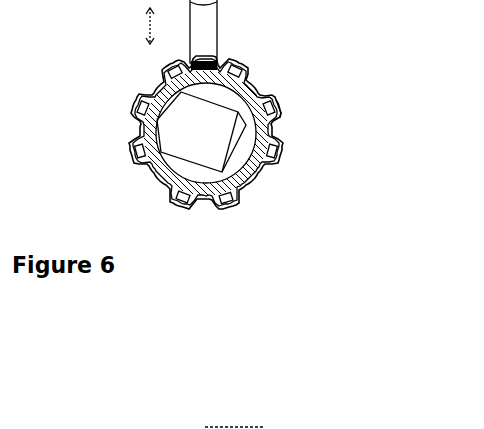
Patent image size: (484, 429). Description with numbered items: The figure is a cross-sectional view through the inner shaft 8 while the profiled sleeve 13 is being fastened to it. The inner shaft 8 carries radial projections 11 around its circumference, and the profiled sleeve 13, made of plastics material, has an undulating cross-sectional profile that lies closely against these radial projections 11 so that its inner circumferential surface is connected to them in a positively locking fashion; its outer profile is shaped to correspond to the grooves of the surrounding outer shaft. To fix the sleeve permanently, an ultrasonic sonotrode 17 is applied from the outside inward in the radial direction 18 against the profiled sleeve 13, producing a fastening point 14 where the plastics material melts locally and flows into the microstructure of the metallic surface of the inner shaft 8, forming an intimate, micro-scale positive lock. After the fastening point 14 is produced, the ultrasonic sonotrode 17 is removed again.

The inner shaft 8 is at (247, 205).
The radial projections 11 is at (278, 165).
The profiled sleeve 13 is at (278, 117).
The fastening point 14 is at (203, 72).
The ultrasonic sonotrode 17 is at (210, 32).
The radial direction 18 is at (146, 25).